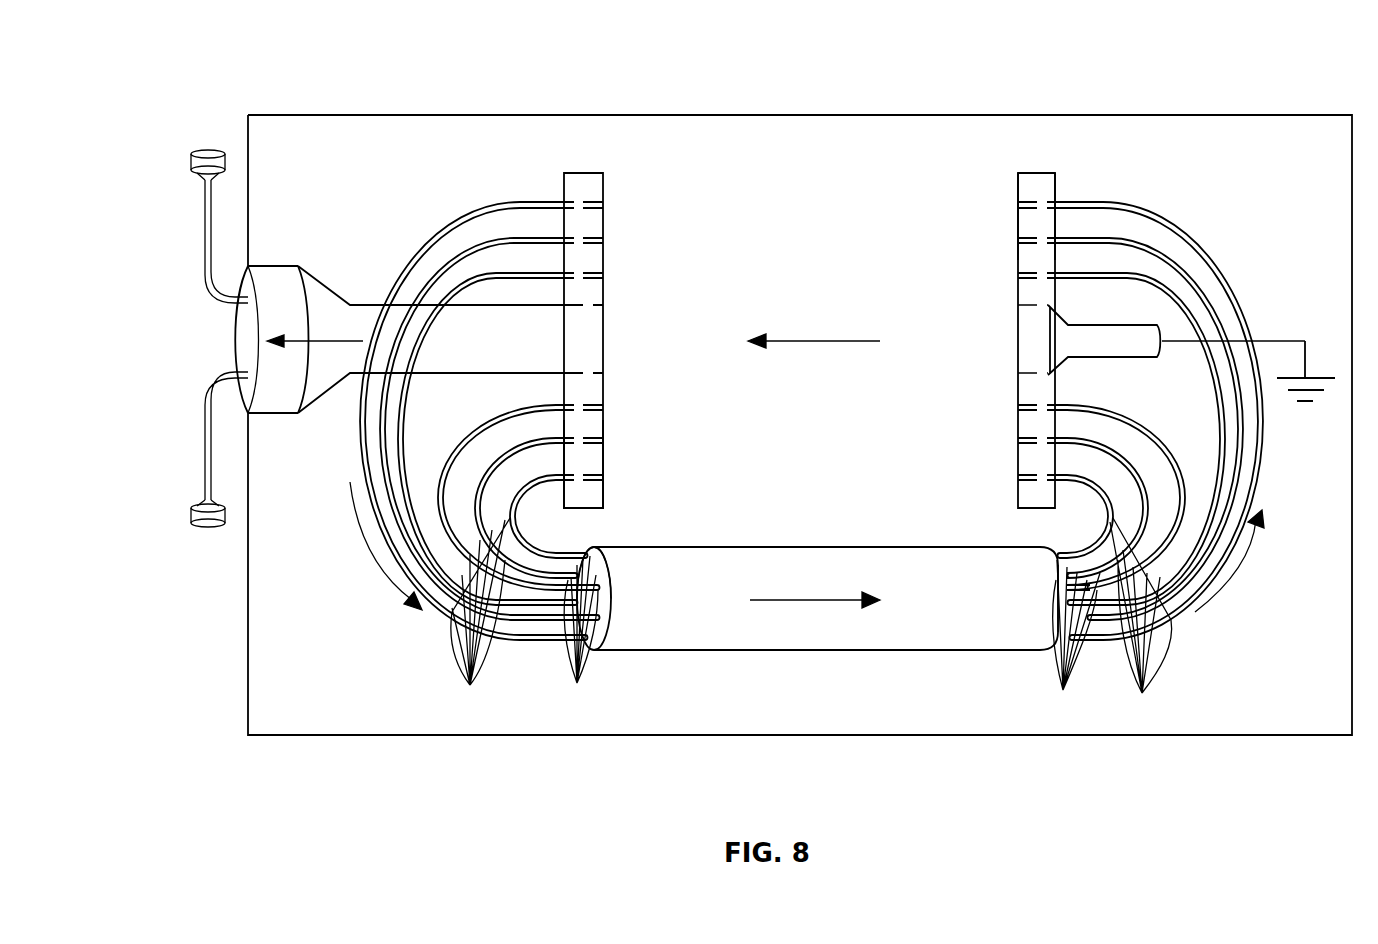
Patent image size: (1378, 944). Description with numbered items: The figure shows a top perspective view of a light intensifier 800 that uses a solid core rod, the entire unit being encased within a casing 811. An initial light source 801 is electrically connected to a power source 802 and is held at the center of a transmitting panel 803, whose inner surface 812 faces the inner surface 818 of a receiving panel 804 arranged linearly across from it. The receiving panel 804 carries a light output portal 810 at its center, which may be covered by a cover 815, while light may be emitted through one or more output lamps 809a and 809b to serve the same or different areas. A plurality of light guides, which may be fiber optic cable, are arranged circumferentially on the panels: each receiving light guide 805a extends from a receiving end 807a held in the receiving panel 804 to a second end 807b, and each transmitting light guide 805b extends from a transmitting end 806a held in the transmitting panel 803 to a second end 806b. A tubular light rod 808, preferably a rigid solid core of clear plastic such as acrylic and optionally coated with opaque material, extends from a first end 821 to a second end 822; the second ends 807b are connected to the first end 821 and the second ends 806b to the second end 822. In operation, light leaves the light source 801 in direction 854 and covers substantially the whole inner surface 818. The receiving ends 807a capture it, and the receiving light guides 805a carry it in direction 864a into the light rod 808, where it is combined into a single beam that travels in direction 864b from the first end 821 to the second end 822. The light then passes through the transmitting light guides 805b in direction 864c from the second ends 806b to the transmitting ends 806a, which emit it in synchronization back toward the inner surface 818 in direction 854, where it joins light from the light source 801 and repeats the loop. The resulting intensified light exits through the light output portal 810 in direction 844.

The light intensifier 800 is at (378, 57).
The initial light source 801 is at (1197, 333).
The power source 802 is at (1305, 404).
The transmitting panel 803 is at (1017, 262).
The receiving panel 804 is at (604, 260).
The receiving light guides 805a is at (476, 618).
The transmitting light guides 805b is at (1143, 621).
The transmitting end 806a is at (1068, 278).
The second end 806b is at (1068, 641).
The receiving end 807a is at (551, 278).
The second end 807b is at (576, 635).
The tubular light rod 808 is at (965, 547).
The output lamp 809a is at (207, 232).
The output lamp 809b is at (207, 400).
The light output portal 810 is at (278, 265).
The casing 811 is at (291, 113).
The inner surface 812 is at (1017, 215).
The cover 815 is at (240, 332).
The inner surface 818 is at (604, 462).
The first end 821 is at (612, 634).
The second end 822 is at (1046, 632).
The direction 844 is at (318, 385).
The direction 854 is at (800, 336).
The direction 864a is at (370, 546).
The direction 864b is at (778, 601).
The direction 864c is at (1243, 561).